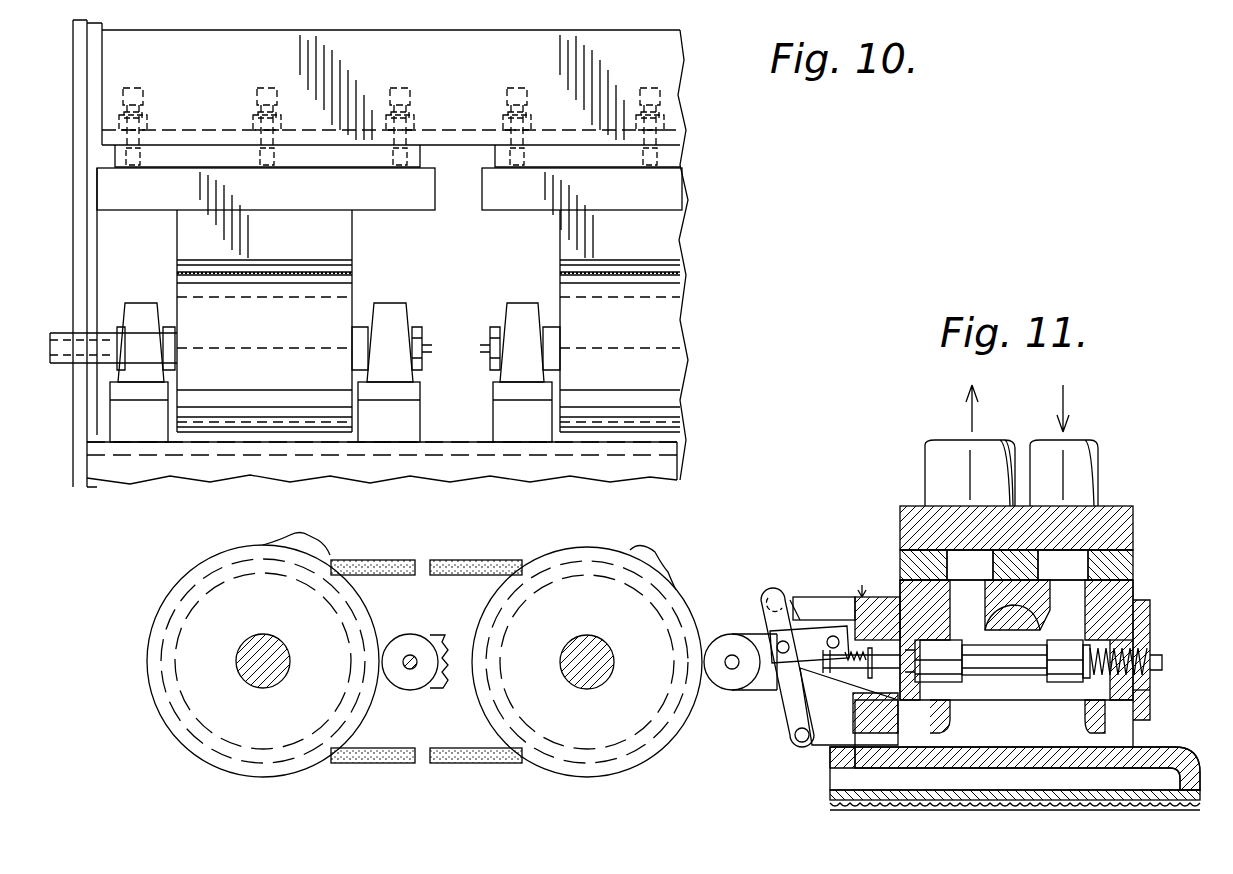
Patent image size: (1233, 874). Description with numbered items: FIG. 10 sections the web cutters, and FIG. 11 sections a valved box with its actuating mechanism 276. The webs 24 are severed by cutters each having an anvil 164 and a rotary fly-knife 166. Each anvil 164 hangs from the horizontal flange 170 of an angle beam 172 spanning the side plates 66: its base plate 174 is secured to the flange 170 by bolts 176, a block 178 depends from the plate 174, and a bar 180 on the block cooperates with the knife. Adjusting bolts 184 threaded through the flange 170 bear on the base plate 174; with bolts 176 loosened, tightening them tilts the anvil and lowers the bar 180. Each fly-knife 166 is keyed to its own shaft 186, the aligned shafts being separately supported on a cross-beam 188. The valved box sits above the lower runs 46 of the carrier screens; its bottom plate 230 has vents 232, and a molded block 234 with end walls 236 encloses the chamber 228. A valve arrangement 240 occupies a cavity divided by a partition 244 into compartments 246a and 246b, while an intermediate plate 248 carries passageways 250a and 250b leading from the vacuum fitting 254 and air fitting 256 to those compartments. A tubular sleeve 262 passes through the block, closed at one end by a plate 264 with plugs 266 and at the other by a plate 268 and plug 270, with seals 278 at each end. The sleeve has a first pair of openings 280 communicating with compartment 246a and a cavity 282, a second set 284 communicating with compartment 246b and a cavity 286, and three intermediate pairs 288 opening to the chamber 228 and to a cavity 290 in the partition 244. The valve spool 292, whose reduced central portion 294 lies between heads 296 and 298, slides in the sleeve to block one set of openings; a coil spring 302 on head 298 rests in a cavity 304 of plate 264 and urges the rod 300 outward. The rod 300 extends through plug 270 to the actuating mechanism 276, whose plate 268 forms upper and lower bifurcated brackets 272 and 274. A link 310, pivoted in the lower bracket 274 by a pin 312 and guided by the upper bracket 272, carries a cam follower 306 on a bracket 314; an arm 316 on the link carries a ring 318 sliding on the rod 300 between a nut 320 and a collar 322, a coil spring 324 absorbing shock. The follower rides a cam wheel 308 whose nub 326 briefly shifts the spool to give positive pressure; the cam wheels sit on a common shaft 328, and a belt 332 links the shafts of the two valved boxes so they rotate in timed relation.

In FIG. 10, the side plates 66 is at (73, 264).
In FIG. 10, the angle beam 172 is at (722, 71).
In FIG. 10, the flange 170 is at (690, 138).
In FIG. 10, the base plate 174 is at (680, 158).
In FIG. 10, the block 178 is at (352, 232).
In FIG. 10, the bolts 184 is at (144, 86).
In FIG. 10, the bolts 176 is at (145, 118).
In FIG. 10, the anvil 164 is at (160, 257).
In FIG. 10, the bar 180 is at (352, 272).
In FIG. 10, the webs 24 is at (263, 283).
In FIG. 10, the rotary fly-knife 166 is at (200, 310).
In FIG. 10, the shaft 186 is at (484, 345).
In FIG. 10, the cross-beam 188 is at (458, 440).
In FIG. 11, the cam wheel 308 is at (258, 606).
In FIG. 11, the shaft 328 is at (258, 682).
In FIG. 11, the nub 326 is at (318, 518).
In FIG. 11, the belt 332 is at (445, 558).
In FIG. 11, the cam follower 306 is at (400, 688).
In FIG. 11, the bracket 314 is at (440, 635).
In FIG. 11, the link 310 is at (772, 588).
In FIG. 11, the arm 316 is at (805, 600).
In FIG. 11, the upper bifurcated bracket 272 is at (830, 597).
In FIG. 11, the coil spring 324 is at (809, 644).
In FIG. 11, the rod 300 is at (870, 682).
In FIG. 11, the ring 318 is at (800, 720).
In FIG. 11, the nut 320 is at (798, 712).
In FIG. 11, the pin 312 is at (810, 742).
In FIG. 11, the lower bifurcated bracket 274 is at (825, 745).
In FIG. 11, the valve arrangement 240 is at (1157, 547).
In FIG. 11, the intermediate plate 248 is at (1125, 555).
In FIG. 11, the partition 244 is at (1135, 590).
In FIG. 11, the cavity 290 is at (1128, 612).
In FIG. 11, the plate 264 is at (1150, 625).
In FIG. 11, the cavity 304 is at (1158, 655).
In FIG. 11, the coil spring 302 is at (1148, 660).
In FIG. 11, the plugs 266 is at (1120, 678).
In FIG. 11, the seals 278 is at (1150, 700).
In FIG. 11, the molded block 234 is at (1167, 740).
In FIG. 11, the end walls 236 is at (1175, 770).
In FIG. 11, the passageway 250a is at (970, 560).
In FIG. 11, the passageway 250b is at (1058, 560).
In FIG. 11, the fitting 254 is at (945, 455).
In FIG. 11, the fitting 256 is at (1085, 455).
In FIG. 11, the compartment 246a is at (970, 610).
In FIG. 11, the compartment 246b is at (1065, 610).
In FIG. 11, the intermediate pairs of openings 288 is at (1012, 617).
In FIG. 11, the head 296 is at (938, 661).
In FIG. 11, the central portion 294 is at (1004, 660).
In FIG. 11, the head 298 is at (1065, 661).
In FIG. 11, the valve spool 292 is at (998, 690).
In FIG. 11, the second set of openings 284 is at (1027, 710).
In FIG. 11, the sleeve 262 is at (1022, 700).
In FIG. 11, the cavity 286 is at (1090, 715).
In FIG. 11, the cavity 282 is at (930, 715).
In FIG. 11, the plug 270 is at (950, 740).
In FIG. 11, the first pair of openings 280 is at (980, 740).
In FIG. 11, the chamber 228 is at (1035, 800).
In FIG. 11, the openings or vents 232 is at (1140, 780).
In FIG. 11, the bottom plate 230 is at (1108, 805).
In FIG. 11, the lower runs 46 is at (1172, 810).
In FIG. 11, the collar 322 is at (872, 593).
In FIG. 11, the plate 268 is at (866, 572).
In FIG. 11, the actuating mechanism 276 is at (810, 512).